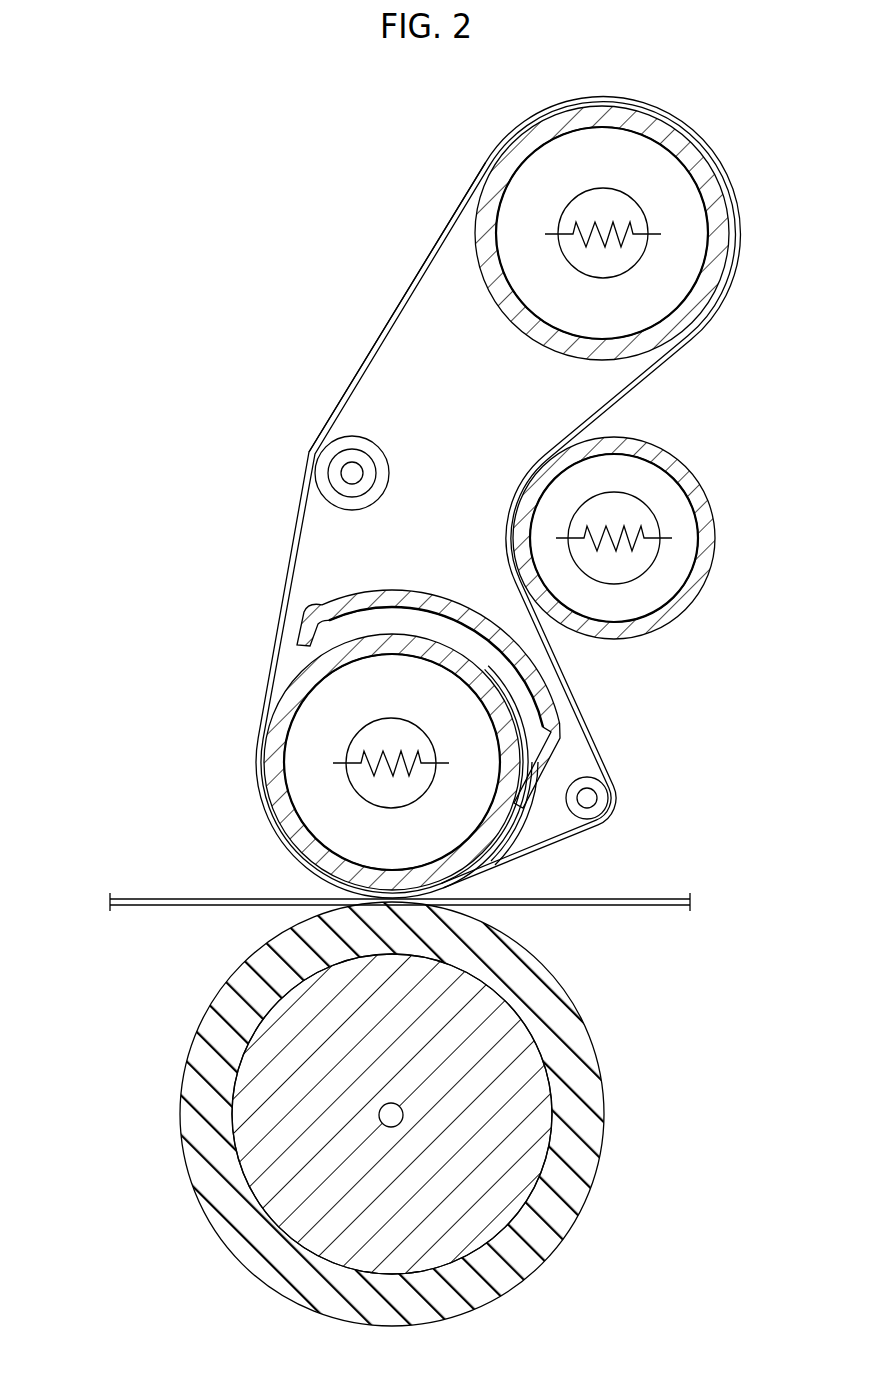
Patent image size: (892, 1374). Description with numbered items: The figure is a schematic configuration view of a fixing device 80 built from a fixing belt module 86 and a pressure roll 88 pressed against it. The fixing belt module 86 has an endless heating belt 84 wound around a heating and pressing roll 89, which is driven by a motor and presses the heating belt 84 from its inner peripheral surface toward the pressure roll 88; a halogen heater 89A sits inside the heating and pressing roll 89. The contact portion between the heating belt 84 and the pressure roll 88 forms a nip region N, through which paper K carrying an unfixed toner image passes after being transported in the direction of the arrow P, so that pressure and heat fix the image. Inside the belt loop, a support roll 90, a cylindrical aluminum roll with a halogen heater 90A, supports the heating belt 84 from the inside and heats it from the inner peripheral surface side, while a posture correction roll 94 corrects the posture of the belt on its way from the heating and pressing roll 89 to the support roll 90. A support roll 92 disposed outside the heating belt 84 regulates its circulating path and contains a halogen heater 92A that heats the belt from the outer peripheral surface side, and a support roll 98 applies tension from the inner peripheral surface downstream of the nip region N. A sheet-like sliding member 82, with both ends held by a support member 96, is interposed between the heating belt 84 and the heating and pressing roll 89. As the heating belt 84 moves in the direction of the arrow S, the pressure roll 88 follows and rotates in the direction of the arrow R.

The fixing device 80 is at (192, 167).
The sliding member 82 is at (527, 802).
The heating belt 84 is at (397, 312).
The fixing belt module 86 is at (237, 397).
The pressure roll 88 is at (626, 1114).
The heating and pressing roll 89 is at (392, 719).
The halogen heater 89A is at (388, 717).
The support roll 90 is at (582, 233).
The halogen heater 90A is at (604, 278).
The support roll 92 is at (638, 553).
The halogen heater 92A is at (643, 572).
The posture correction roll 94 is at (389, 462).
The support member 96 is at (562, 680).
The support roll 98 is at (606, 795).
The paper K is at (176, 908).
The nip region N is at (312, 885).
The arrow P is at (226, 871).
The arrow S is at (263, 565).
The arrow R is at (165, 1017).